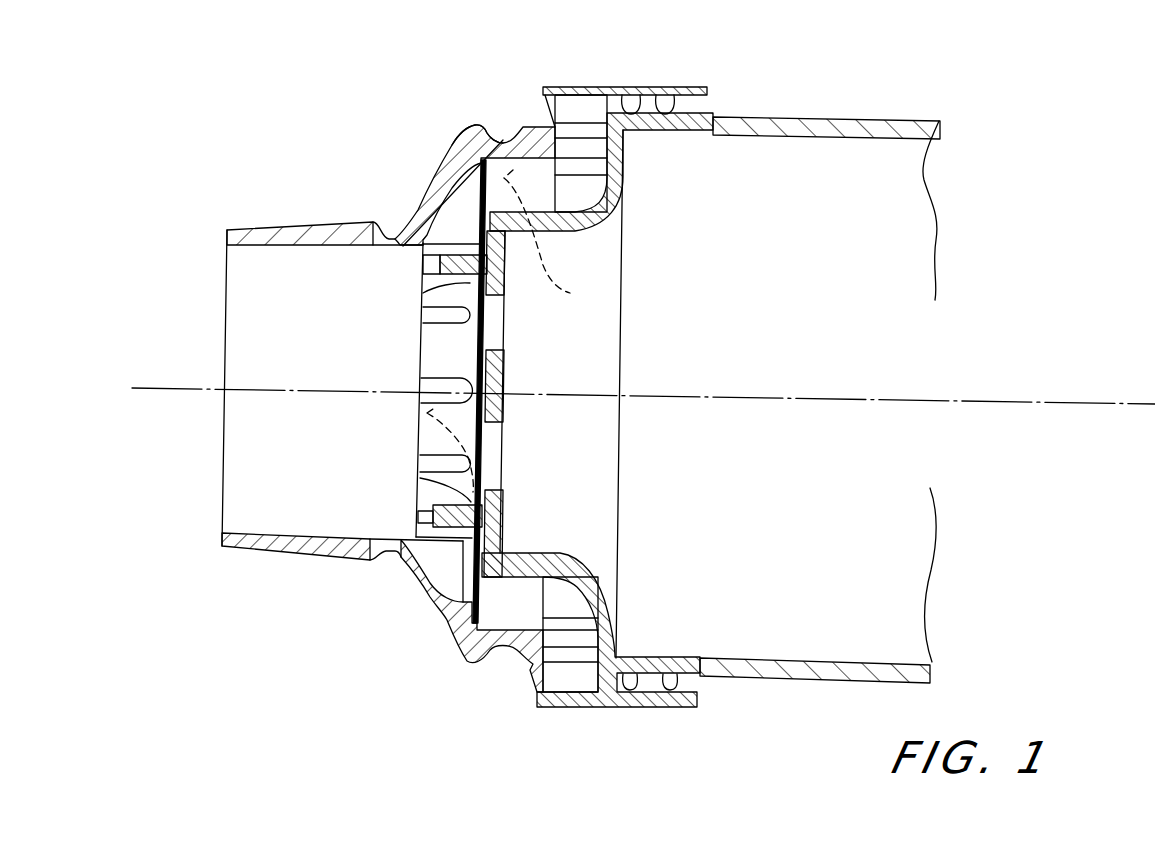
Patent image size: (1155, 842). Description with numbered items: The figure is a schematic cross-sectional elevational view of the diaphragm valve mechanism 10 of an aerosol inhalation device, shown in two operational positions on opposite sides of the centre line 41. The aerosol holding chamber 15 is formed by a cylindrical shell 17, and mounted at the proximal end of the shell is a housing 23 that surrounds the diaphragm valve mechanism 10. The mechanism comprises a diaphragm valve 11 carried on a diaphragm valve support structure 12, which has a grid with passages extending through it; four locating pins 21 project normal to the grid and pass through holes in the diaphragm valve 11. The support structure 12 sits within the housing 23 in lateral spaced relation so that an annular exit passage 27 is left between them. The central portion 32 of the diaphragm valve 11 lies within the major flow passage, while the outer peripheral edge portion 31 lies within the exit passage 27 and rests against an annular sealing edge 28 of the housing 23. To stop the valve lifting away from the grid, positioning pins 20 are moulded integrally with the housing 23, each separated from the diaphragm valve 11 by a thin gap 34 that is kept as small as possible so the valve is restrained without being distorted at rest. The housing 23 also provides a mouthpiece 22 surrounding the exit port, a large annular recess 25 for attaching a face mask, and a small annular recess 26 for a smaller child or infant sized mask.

The diaphragm valve mechanism 10 is at (374, 642).
The diaphragm valve 11 is at (473, 337).
The diaphragm valve support structure 12 is at (606, 218).
The aerosol holding chamber 15 is at (824, 503).
The cylindrical shell 17 is at (850, 137).
The positioning pin 20 is at (477, 227).
The locating pin 21 is at (423, 278).
The mouthpiece 22 is at (256, 229).
The housing 23 is at (592, 706).
The large annular recess 25 is at (505, 141).
The small annular recess 26 is at (393, 230).
The annular exit passage 27 is at (527, 617).
The annular sealing edge 28 is at (447, 630).
The outer peripheral edge portion 31 is at (556, 242).
The central portion 32 is at (432, 431).
The thin gap 34 is at (453, 227).
The centre line 41 is at (1017, 402).